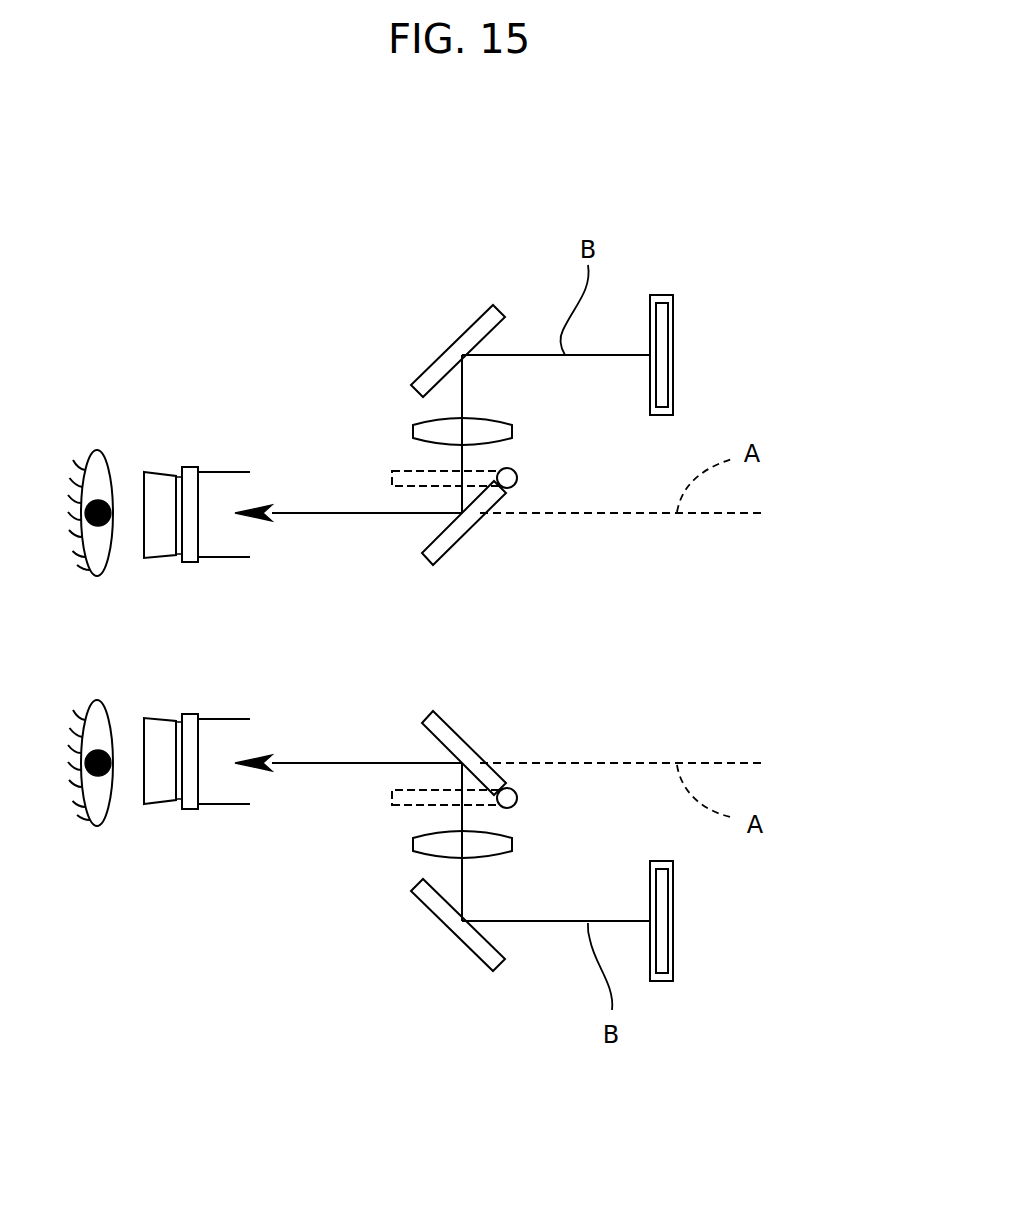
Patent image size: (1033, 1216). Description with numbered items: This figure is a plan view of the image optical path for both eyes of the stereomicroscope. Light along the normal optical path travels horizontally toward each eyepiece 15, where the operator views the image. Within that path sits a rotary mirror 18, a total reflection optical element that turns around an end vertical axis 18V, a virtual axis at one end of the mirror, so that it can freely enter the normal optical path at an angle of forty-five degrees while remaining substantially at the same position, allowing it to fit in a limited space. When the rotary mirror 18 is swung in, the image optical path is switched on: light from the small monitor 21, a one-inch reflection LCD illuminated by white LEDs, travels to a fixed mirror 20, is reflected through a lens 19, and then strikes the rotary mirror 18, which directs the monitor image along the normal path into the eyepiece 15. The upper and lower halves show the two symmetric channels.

The eyepiece 15 is at (192, 467).
The rotary mirror 18 is at (453, 543).
The end vertical axis 18V is at (517, 473).
The lens 19 is at (427, 422).
The fixed mirror 20 is at (472, 327).
The small monitor 21 is at (673, 334).